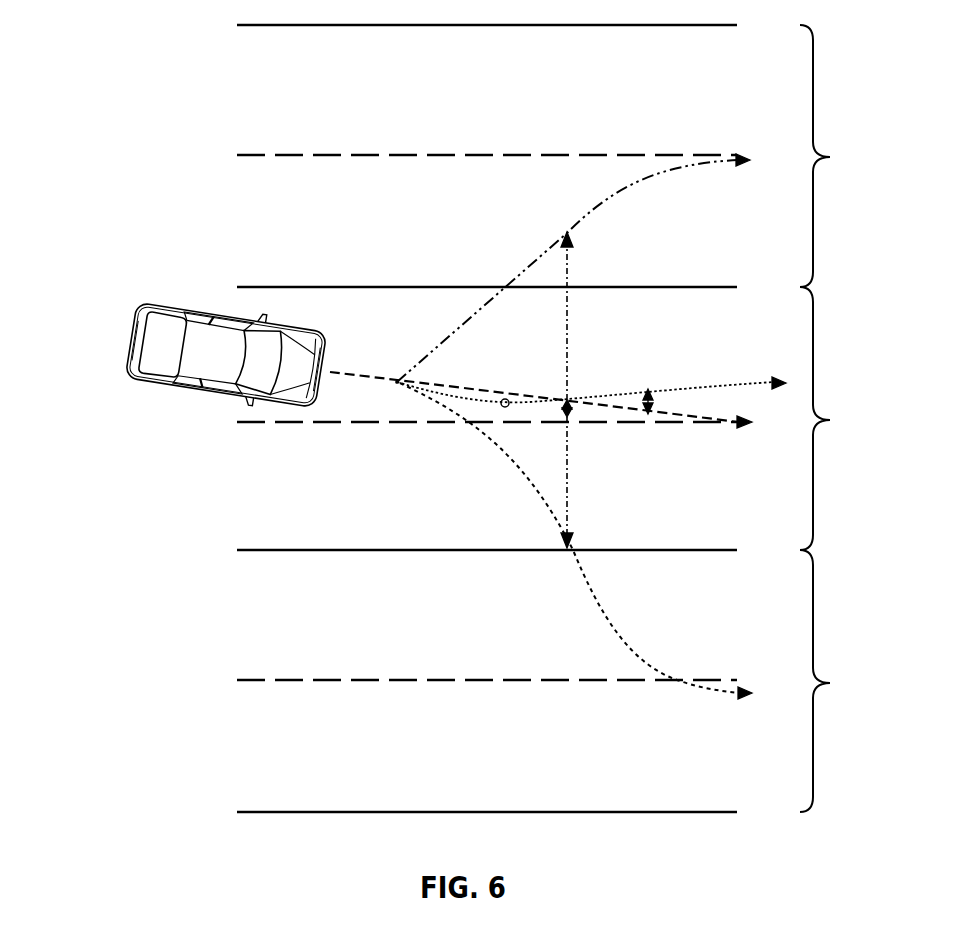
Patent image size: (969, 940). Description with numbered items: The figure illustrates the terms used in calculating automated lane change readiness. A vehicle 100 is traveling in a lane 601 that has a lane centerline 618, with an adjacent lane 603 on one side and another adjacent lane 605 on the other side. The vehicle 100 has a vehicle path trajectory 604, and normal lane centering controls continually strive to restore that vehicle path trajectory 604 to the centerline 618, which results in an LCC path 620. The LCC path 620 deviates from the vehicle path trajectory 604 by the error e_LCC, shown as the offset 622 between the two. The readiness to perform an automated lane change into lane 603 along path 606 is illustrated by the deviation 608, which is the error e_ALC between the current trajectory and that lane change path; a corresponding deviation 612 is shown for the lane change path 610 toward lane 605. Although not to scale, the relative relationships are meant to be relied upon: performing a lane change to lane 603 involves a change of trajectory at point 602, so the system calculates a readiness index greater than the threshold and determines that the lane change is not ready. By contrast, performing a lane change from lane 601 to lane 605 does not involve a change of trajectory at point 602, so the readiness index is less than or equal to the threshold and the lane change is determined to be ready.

The vehicle 100 is at (128, 350).
The lane 601 is at (560, 418).
The lane 603 is at (560, 156).
The lane 605 is at (560, 681).
The point 602 is at (398, 402).
The vehicle path trajectory 604 is at (758, 380).
The path 606 is at (552, 247).
The deviation 608 is at (569, 275).
The right lane change path 610 is at (592, 580).
The deviation 612 is at (569, 490).
The lane centerline 618 is at (321, 433).
The LCC path 620 is at (508, 398).
The error e_LCC 622 is at (652, 406).